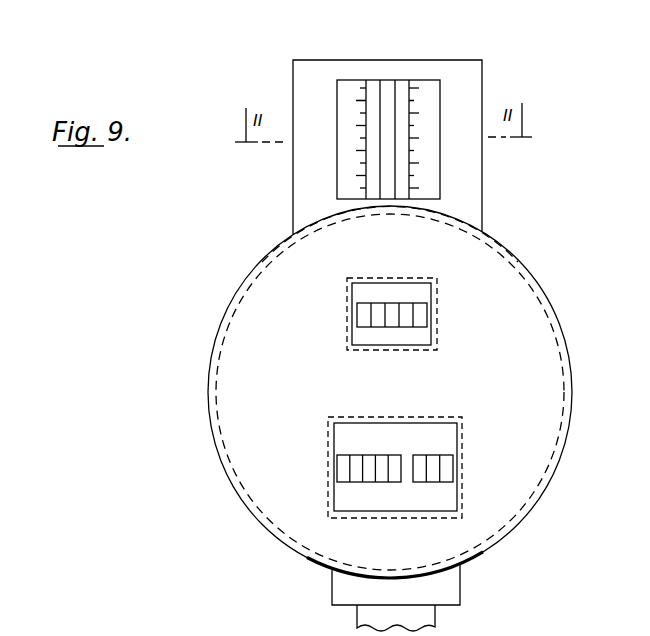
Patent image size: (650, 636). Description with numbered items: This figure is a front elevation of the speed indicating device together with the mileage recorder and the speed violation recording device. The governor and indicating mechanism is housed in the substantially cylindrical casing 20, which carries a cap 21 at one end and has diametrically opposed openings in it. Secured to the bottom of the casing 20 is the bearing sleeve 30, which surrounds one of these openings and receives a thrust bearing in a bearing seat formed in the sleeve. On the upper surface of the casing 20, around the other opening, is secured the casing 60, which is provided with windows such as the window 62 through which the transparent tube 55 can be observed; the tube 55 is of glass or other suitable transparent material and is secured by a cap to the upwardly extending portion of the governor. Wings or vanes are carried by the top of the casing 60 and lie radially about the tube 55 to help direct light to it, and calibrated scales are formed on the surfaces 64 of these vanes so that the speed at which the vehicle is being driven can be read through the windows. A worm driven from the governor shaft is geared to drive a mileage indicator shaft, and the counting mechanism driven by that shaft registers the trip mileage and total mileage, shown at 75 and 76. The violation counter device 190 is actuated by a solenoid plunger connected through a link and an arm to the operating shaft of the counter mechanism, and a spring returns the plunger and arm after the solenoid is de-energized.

The casing 60 is at (473, 60).
The window 62 is at (437, 175).
The surfaces of the vanes 64 is at (360, 106).
The tube 55 is at (373, 155).
The casing 20 is at (556, 353).
The cap 21 is at (508, 288).
The violation counter device 190 is at (417, 295).
The total mileage register 76 is at (387, 455).
The trip mileage register 75 is at (447, 455).
The bearing sleeve 30 is at (427, 618).